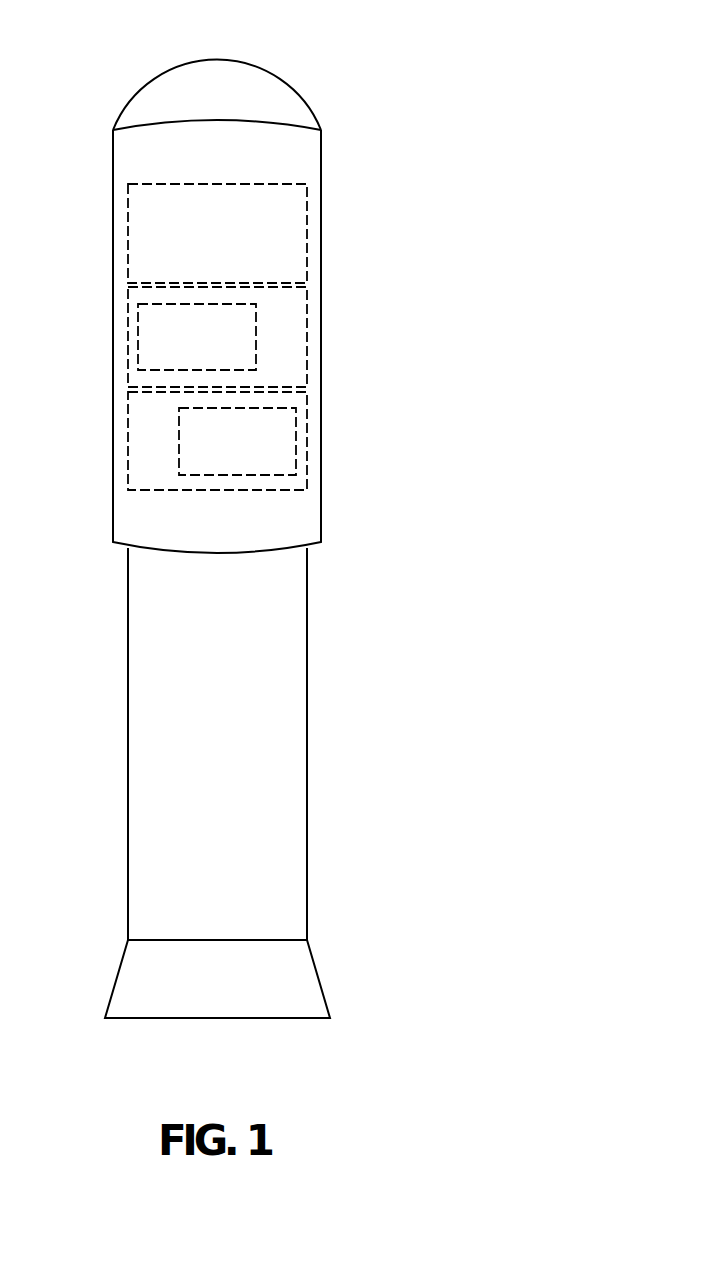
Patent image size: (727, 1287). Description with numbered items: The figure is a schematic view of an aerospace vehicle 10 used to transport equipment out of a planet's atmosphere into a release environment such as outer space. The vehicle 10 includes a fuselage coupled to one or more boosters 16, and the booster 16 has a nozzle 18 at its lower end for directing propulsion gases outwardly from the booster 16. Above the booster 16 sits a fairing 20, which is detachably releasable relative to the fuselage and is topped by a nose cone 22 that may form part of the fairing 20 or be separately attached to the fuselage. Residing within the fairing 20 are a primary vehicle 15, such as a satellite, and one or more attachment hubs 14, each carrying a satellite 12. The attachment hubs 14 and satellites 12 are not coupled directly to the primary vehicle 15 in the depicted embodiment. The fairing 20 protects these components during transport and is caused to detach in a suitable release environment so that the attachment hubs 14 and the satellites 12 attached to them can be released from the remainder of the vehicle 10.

The aerospace vehicle 10 is at (231, 516).
The satellite 12 is at (149, 345).
The attachment hub 14 is at (307, 335).
The primary vehicle 15 is at (307, 232).
The booster 16 is at (307, 744).
The nozzle 18 is at (320, 978).
The fairing 20 is at (228, 341).
The nose cone 22 is at (291, 106).